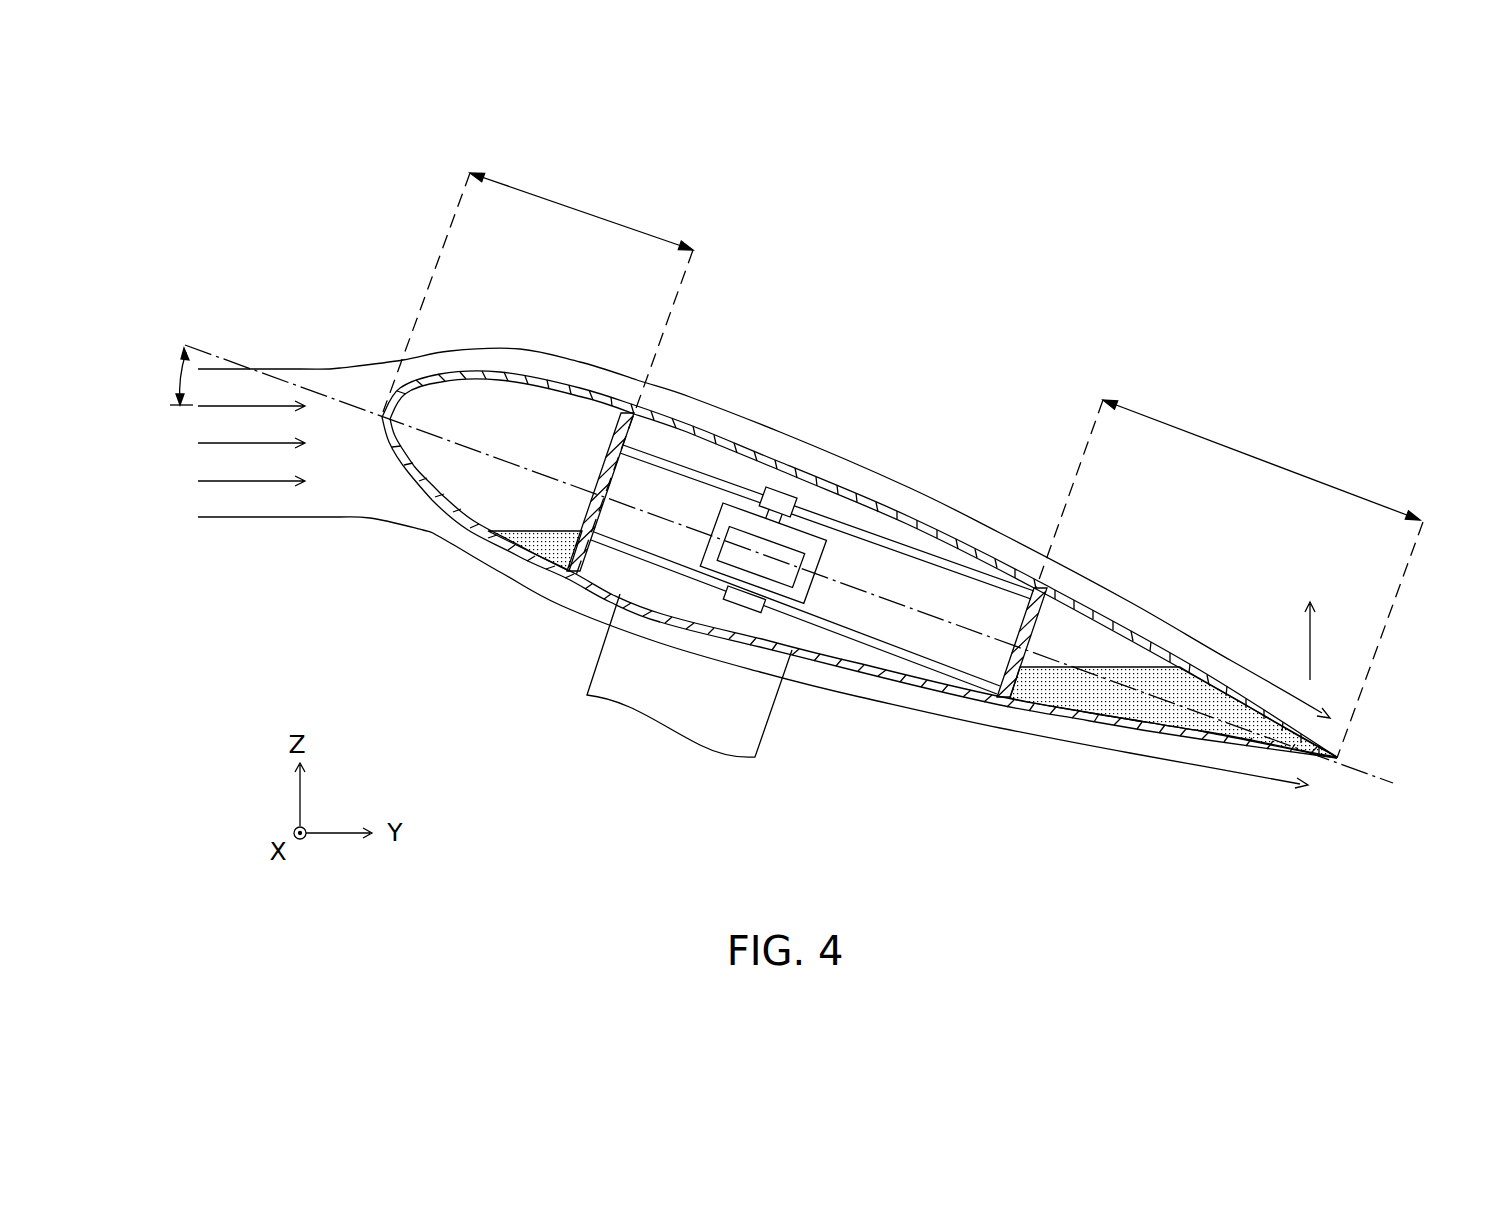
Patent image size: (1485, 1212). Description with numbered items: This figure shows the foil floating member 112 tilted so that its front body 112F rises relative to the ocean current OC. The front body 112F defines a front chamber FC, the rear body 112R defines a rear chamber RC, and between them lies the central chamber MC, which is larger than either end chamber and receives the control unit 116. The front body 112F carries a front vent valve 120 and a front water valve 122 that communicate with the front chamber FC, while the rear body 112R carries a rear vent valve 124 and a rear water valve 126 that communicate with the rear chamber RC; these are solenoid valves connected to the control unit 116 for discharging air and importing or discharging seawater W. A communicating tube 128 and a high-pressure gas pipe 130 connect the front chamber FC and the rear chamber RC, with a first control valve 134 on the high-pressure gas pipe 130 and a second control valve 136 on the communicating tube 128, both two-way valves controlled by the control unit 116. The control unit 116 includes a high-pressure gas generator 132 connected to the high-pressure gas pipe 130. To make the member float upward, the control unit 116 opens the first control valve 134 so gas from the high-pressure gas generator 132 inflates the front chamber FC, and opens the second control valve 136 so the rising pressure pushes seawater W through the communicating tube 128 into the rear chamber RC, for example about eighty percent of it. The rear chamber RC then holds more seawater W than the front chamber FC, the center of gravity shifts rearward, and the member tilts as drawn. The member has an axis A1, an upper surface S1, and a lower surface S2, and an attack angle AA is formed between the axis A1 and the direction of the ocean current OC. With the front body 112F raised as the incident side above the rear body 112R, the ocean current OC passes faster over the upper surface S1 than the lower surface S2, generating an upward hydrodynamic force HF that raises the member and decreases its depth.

The foil floating member 112 is at (1239, 601).
The front body 112F is at (538, 374).
The rear body 112R is at (1229, 579).
The control unit 116 is at (812, 558).
The front vent valve 120 is at (517, 380).
The front water valve 122 is at (463, 527).
The rear vent valve 124 is at (1123, 622).
The rear water valve 126 is at (1087, 717).
The communicating tube 128 is at (900, 655).
The high-pressure gas pipe 130 is at (913, 552).
The high-pressure gas generator 132 is at (802, 560).
The first control valve 134 is at (780, 505).
The second control valve 136 is at (747, 598).
The front chamber FC is at (547, 423).
The central chamber MC is at (978, 607).
The rear chamber RC is at (1088, 643).
The upper surface S1 is at (859, 520).
The lower surface S2 is at (848, 630).
The seawater W is at (547, 550).
The ocean current OC is at (250, 520).
The attack angle AA is at (164, 376).
The hydrodynamic force HF is at (1328, 641).
The axis A1 is at (809, 575).